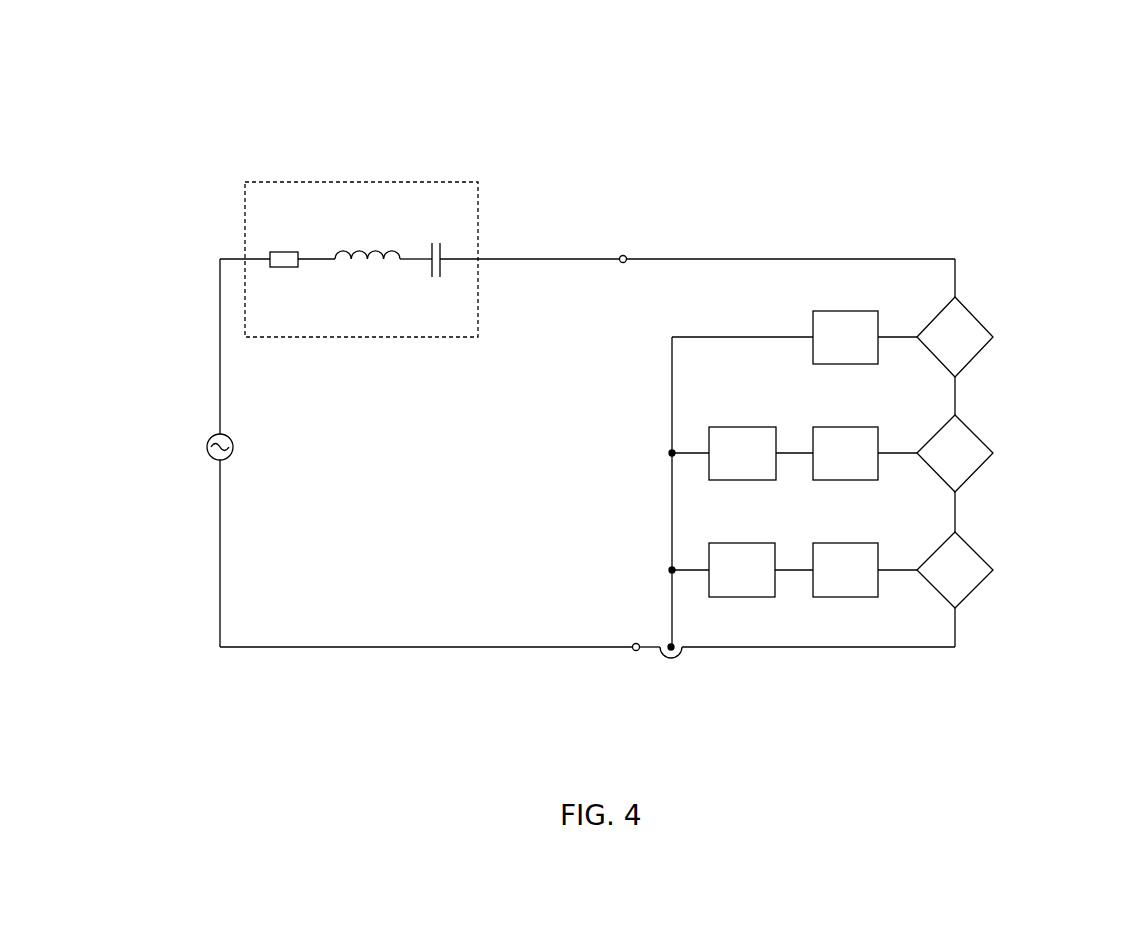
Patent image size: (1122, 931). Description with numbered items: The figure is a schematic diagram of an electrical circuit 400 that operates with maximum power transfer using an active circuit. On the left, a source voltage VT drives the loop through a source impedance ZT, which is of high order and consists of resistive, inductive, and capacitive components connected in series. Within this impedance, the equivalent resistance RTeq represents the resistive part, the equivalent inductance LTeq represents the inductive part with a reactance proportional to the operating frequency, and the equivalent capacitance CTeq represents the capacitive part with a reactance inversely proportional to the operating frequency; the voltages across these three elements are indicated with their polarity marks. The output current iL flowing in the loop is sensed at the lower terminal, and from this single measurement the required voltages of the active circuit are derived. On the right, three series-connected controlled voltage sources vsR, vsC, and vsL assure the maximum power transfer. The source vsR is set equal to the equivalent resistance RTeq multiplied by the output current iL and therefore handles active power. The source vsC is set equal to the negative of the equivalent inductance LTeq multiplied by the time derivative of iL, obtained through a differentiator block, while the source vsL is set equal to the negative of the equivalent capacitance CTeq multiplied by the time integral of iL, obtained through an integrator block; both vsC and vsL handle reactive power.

The electrical circuit operating with maximum power transfer using an active circuit 400 is at (1034, 99).
The source voltage VT is at (204, 447).
The source impedance ZT is at (361, 242).
The equivalent resistance RTeq is at (280, 242).
The equivalent inductance LTeq is at (367, 238).
The equivalent capacitance CTeq is at (433, 247).
The output current iL is at (659, 632).
The resistive compensation voltage source vsR is at (973, 337).
The capacitive compensation voltage source vsC is at (973, 453).
The inductive compensation voltage source vsL is at (972, 570).